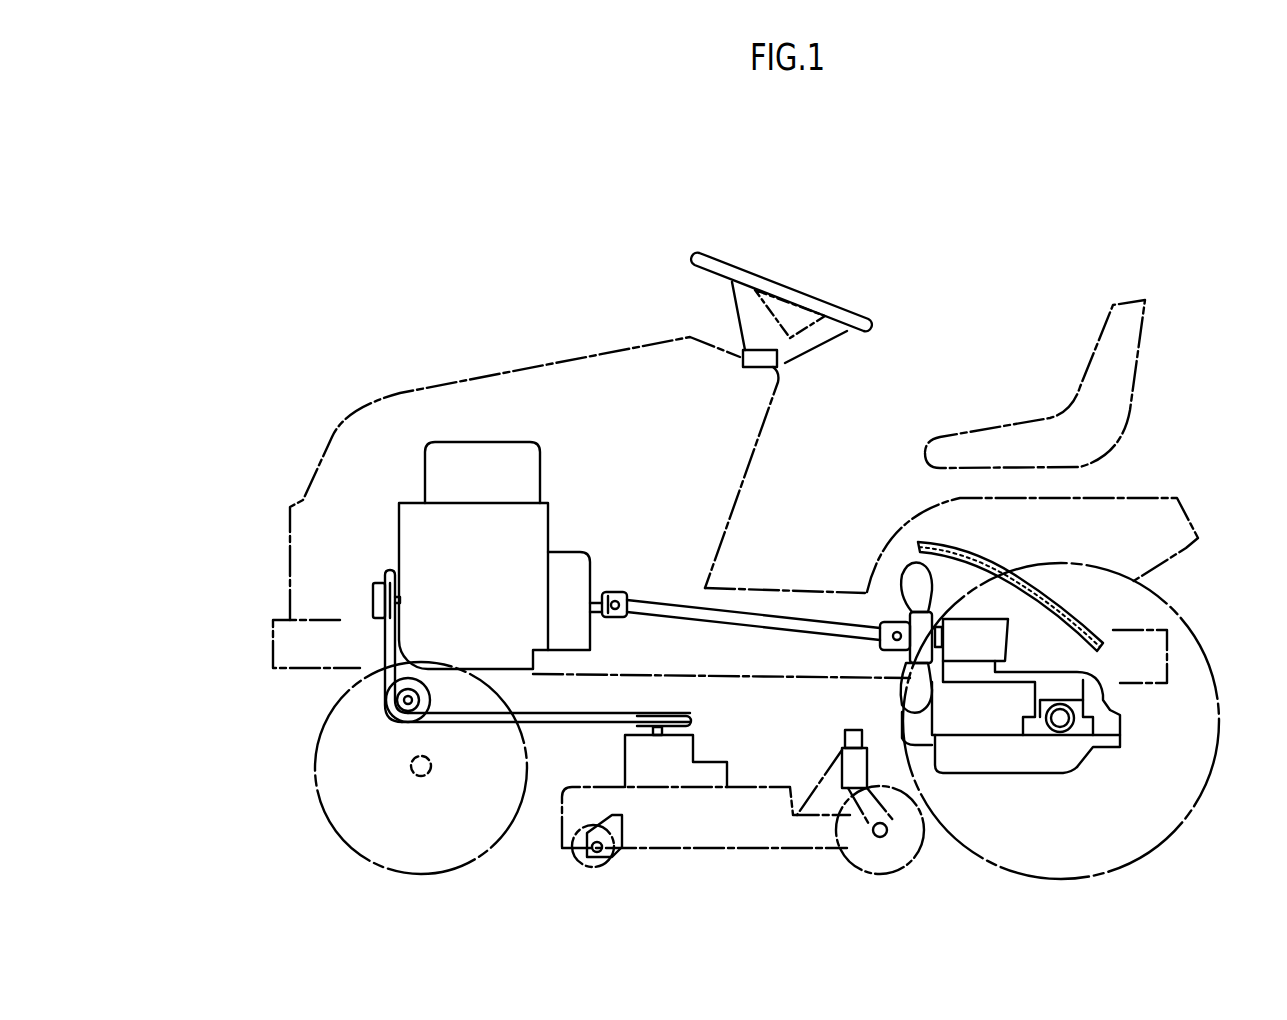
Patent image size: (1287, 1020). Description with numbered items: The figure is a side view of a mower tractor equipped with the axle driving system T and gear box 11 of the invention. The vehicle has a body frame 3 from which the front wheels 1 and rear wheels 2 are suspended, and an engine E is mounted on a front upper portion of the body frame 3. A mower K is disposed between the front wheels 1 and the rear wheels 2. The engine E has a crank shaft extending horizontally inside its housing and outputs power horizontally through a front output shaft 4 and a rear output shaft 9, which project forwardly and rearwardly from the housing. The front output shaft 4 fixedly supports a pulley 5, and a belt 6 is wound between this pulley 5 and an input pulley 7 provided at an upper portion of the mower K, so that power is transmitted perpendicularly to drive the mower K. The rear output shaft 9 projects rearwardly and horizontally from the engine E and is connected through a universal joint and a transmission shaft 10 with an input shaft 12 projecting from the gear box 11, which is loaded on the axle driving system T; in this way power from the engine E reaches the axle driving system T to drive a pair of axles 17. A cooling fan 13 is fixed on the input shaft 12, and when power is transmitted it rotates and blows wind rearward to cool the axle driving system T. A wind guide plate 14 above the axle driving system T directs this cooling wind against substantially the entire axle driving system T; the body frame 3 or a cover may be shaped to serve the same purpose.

The front wheels 1 is at (316, 742).
The rear wheels 2 is at (1212, 790).
The body frame 3 is at (300, 670).
The front output shaft 4 is at (400, 601).
The pulley 5 is at (385, 573).
The belt 6 is at (552, 698).
The input pulley 7 is at (688, 705).
The rear output shaft 9 is at (592, 592).
The transmission shaft 10 is at (770, 616).
The gear box 11 is at (1008, 640).
The input shaft 12 is at (903, 672).
The cooling fan 13 is at (905, 565).
The wind guide plate 14 is at (982, 556).
The axles 17 is at (1065, 722).
The engine E is at (548, 503).
The mower K is at (541, 828).
The axle driving system T is at (1028, 765).